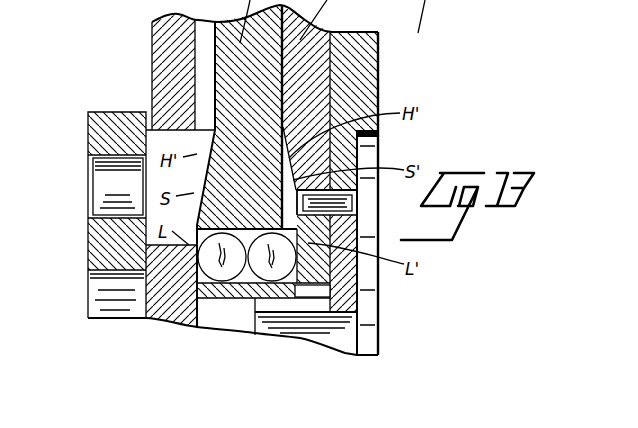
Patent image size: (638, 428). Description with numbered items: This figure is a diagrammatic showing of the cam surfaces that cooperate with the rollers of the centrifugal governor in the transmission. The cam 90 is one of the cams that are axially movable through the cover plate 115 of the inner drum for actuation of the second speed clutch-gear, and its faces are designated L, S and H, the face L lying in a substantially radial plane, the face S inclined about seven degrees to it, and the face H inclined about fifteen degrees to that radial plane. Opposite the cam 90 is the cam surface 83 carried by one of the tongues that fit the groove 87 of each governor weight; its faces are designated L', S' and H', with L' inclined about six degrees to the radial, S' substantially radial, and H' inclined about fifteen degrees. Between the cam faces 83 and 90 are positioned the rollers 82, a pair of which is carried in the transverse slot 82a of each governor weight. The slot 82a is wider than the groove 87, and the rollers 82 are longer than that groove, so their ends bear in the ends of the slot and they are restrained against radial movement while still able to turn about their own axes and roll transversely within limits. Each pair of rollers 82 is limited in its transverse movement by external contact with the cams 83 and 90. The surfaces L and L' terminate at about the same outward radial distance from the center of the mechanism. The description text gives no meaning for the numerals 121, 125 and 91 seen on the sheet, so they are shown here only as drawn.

The end face of housing 121 is at (165, 19).
The screw shaft 125 is at (217, 9).
The cover plate 115 is at (165, 92).
The cam 90 is at (146, 128).
The housing lower portion 91 is at (113, 245).
The groove 87 is at (358, 134).
The cam surface 83 is at (358, 224).
The roller 82 is at (212, 275).
The transverse slot 82a is at (238, 275).